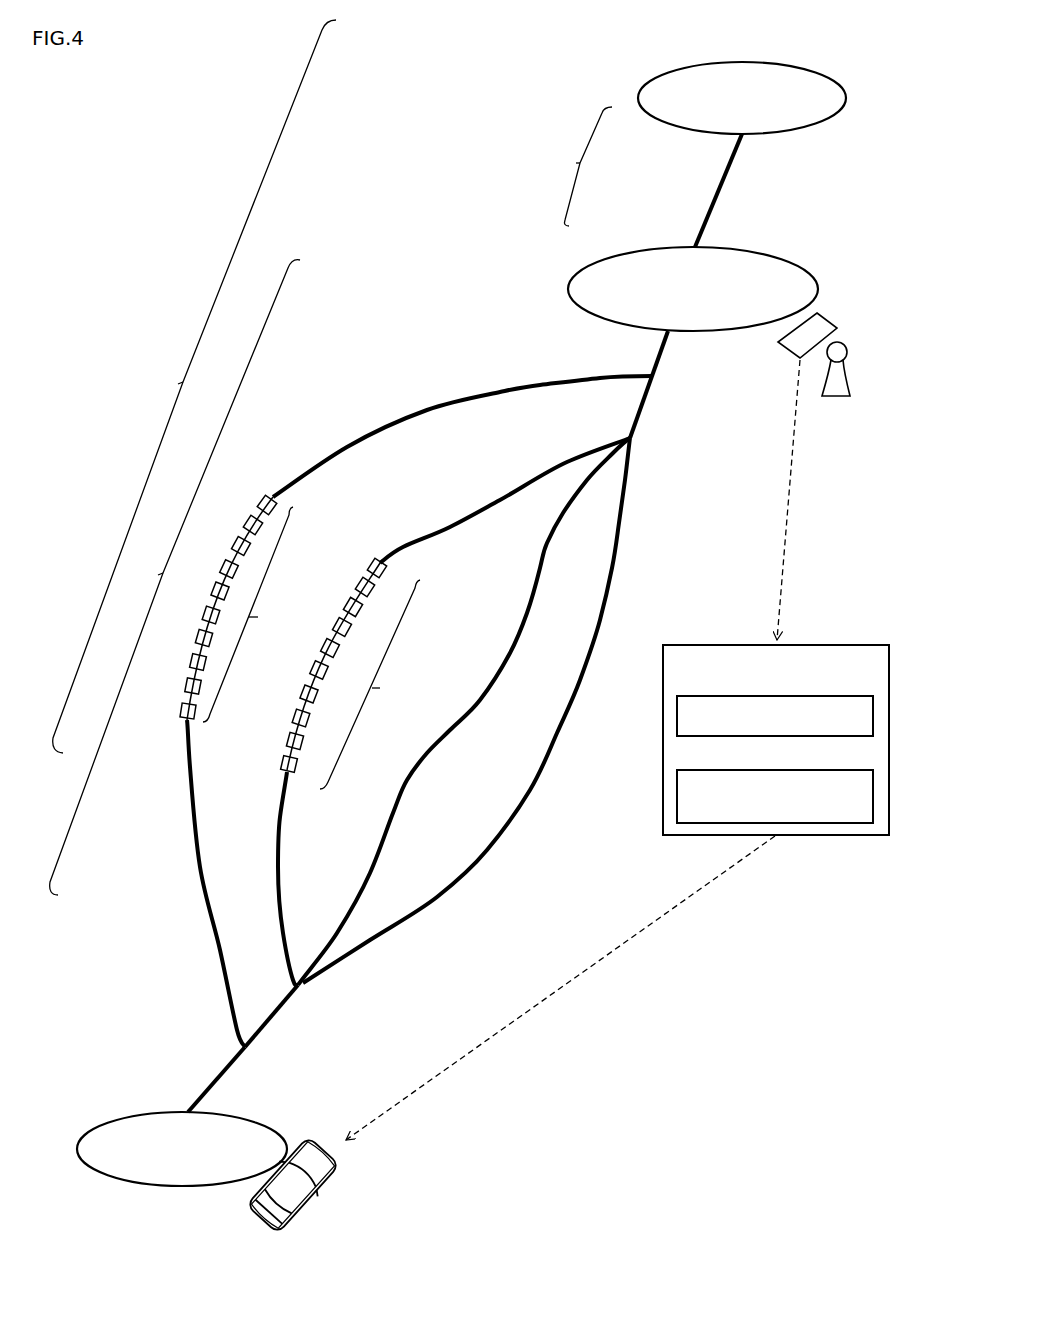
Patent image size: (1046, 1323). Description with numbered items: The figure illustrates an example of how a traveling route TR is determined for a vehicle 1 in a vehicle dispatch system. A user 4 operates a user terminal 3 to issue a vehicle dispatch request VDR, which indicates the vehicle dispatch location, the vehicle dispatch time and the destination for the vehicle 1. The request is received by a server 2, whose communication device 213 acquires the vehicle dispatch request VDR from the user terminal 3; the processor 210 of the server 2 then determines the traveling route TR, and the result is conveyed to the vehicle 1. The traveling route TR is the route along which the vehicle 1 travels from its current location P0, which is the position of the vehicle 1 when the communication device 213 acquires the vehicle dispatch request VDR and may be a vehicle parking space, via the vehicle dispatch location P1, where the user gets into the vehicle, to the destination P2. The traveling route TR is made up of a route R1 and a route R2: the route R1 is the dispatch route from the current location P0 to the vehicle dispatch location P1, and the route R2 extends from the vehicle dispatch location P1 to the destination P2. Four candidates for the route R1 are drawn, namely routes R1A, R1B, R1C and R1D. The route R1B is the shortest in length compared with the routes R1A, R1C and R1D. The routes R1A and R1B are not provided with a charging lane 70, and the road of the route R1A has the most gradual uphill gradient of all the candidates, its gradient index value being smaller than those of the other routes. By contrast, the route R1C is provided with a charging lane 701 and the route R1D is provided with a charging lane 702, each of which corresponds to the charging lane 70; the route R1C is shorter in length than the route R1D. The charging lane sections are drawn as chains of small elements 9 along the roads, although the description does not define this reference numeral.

The destination P2 is at (807, 66).
The route R2 is at (581, 166).
The vehicle dispatch location P1 is at (768, 250).
The user terminal 3 is at (827, 323).
The user 4 is at (850, 352).
The vehicle dispatch request VDR is at (809, 500).
The server 2 is at (855, 645).
The processor 210 is at (824, 696).
The communication device 213 is at (824, 770).
The traveling route TR is at (194, 386).
The route R1 is at (175, 577).
The route R1D is at (344, 444).
The route R1C is at (401, 543).
The route R1B is at (502, 659).
The route R1A is at (560, 744).
The charging lane 70 is at (320, 642).
The charging lane 702 is at (240, 608).
The charging lane 701 is at (353, 673).
The obstacle block 9 is at (313, 699).
The current location P0 is at (240, 1115).
The vehicle 1 is at (327, 1173).